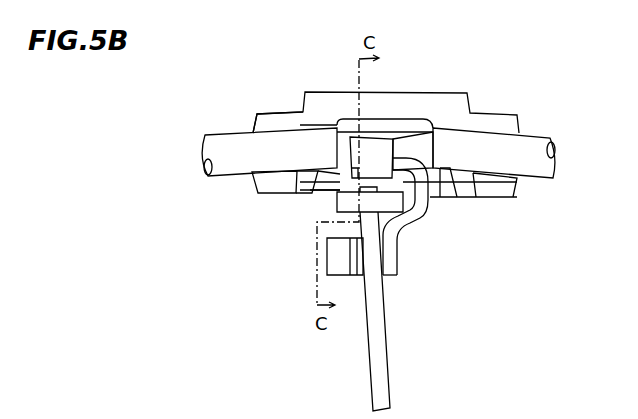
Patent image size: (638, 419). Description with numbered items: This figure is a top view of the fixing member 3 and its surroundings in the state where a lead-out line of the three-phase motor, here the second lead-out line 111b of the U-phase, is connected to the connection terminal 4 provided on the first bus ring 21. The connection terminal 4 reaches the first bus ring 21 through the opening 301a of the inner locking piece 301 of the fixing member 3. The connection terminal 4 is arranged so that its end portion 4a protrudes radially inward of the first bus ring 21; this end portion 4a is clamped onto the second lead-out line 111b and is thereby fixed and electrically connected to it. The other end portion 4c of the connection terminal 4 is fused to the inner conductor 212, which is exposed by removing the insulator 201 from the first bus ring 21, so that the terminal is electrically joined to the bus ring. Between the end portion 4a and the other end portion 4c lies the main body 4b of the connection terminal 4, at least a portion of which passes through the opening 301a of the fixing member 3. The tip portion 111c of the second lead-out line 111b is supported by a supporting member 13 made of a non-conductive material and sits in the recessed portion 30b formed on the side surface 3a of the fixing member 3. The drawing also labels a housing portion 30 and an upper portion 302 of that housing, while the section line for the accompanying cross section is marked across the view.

The fixing member 3 is at (402, 50).
The side surface 3a is at (268, 195).
The connection terminal 4 is at (358, 229).
The end portion 4a is at (330, 270).
The main body 4b is at (407, 216).
The other end portion 4c is at (384, 138).
The supporting member 13 is at (395, 203).
The first bus ring 21 is at (223, 133).
The housing 30 is at (238, 104).
The recessed portion 30b is at (325, 186).
The second lead-out line 111b is at (378, 335).
The tip portion 111c is at (398, 184).
The insulator 201 is at (477, 138).
The inner conductor 212 is at (424, 142).
The inner locking piece 301 is at (260, 185).
The opening 301a is at (306, 210).
The housing upper portion 302 is at (288, 118).